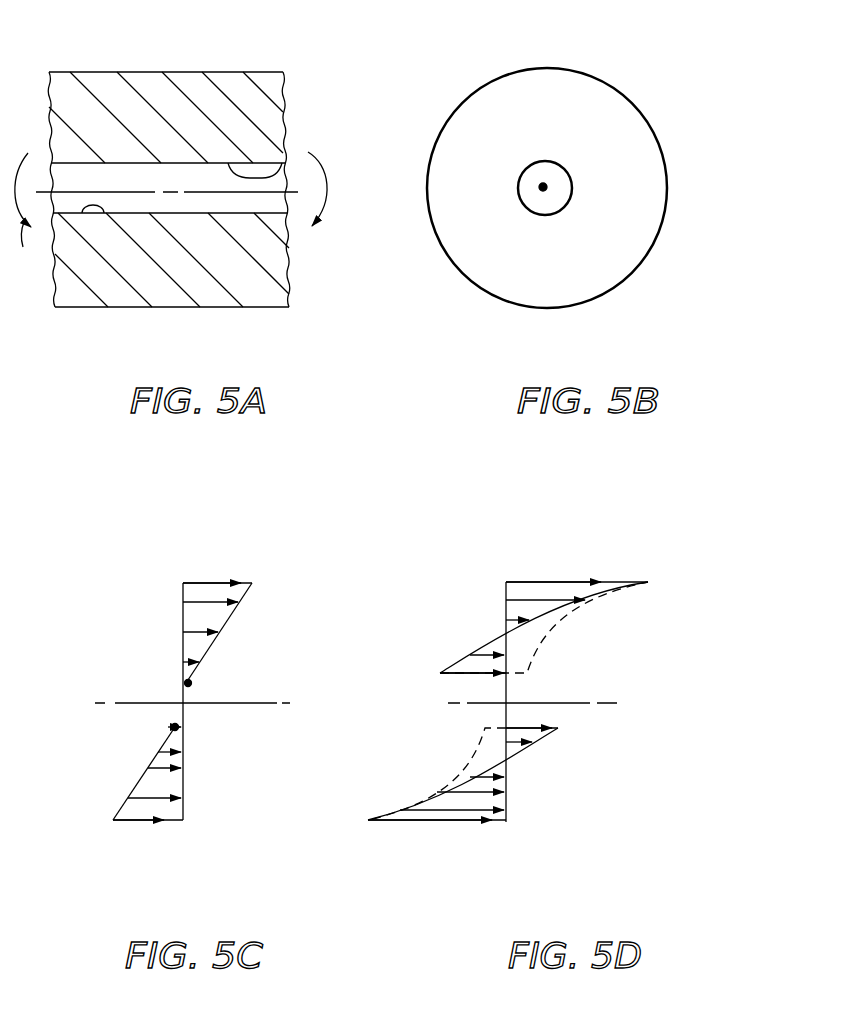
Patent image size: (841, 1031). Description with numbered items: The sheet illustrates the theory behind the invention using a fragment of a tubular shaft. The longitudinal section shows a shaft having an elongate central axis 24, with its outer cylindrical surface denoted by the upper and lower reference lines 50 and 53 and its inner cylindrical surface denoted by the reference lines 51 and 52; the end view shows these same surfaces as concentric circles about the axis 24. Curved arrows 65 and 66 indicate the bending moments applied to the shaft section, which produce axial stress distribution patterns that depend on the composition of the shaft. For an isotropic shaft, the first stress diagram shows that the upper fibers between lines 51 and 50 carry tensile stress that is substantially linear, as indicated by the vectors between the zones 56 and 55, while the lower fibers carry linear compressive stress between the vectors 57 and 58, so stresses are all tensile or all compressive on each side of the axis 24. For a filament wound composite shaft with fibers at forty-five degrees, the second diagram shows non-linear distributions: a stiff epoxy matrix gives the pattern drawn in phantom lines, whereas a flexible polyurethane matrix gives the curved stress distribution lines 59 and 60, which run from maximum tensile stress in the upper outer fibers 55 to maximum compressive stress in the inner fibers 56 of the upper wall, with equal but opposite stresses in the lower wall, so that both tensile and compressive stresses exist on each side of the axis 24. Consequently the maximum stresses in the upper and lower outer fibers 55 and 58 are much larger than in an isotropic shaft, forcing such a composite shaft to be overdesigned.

In FIG. 5A, the elongate central axis 24 is at (78, 190).
In FIG. 5B, the elongate central axis 24 is at (546, 186).
In FIG. 5C, the elongate central axis 24 is at (123, 703).
In FIG. 5D, the elongate central axis 24 is at (568, 703).
In FIG. 5A, the upper reference line of outer cylindrical surface 50 is at (198, 72).
In FIG. 5B, the upper reference line of outer cylindrical surface 50 is at (598, 77).
In FIG. 5A, the upper reference line of inner cylindrical surface 51 is at (281, 160).
In FIG. 5B, the upper reference line of inner cylindrical surface 51 is at (548, 162).
In FIG. 5A, the lower reference line of inner cylindrical surface 52 is at (84, 214).
In FIG. 5B, the lower reference line of inner cylindrical surface 52 is at (543, 215).
In FIG. 5A, the lower reference line of outer cylindrical surface 53 is at (136, 307).
In FIG. 5B, the lower reference line of outer cylindrical surface 53 is at (508, 304).
In FIG. 5C, the zone of maximum tensile stress in upper outer fibers 55 is at (214, 576).
In FIG. 5D, the zone of maximum tensile stress in upper outer fibers 55 is at (575, 582).
In FIG. 5C, the zone at inner fibers of upper wall 56 is at (195, 688).
In FIG. 5D, the zone at inner fibers of upper wall 56 is at (466, 681).
In FIG. 5C, the vector at inner fibers of lower wall 57 is at (166, 714).
In FIG. 5D, the vector at inner fibers of lower wall 57 is at (538, 716).
In FIG. 5C, the zone of maximum stress in lower outer fibers 58 is at (178, 827).
In FIG. 5D, the zone of maximum stress in lower outer fibers 58 is at (393, 826).
In FIG. 5D, the curved stress distribution line 59 is at (506, 632).
In FIG. 5D, the curved stress distribution line 60 is at (506, 759).
In FIG. 5A, the bending moment arrow 65 is at (29, 215).
In FIG. 5A, the bending moment arrow 66 is at (328, 185).